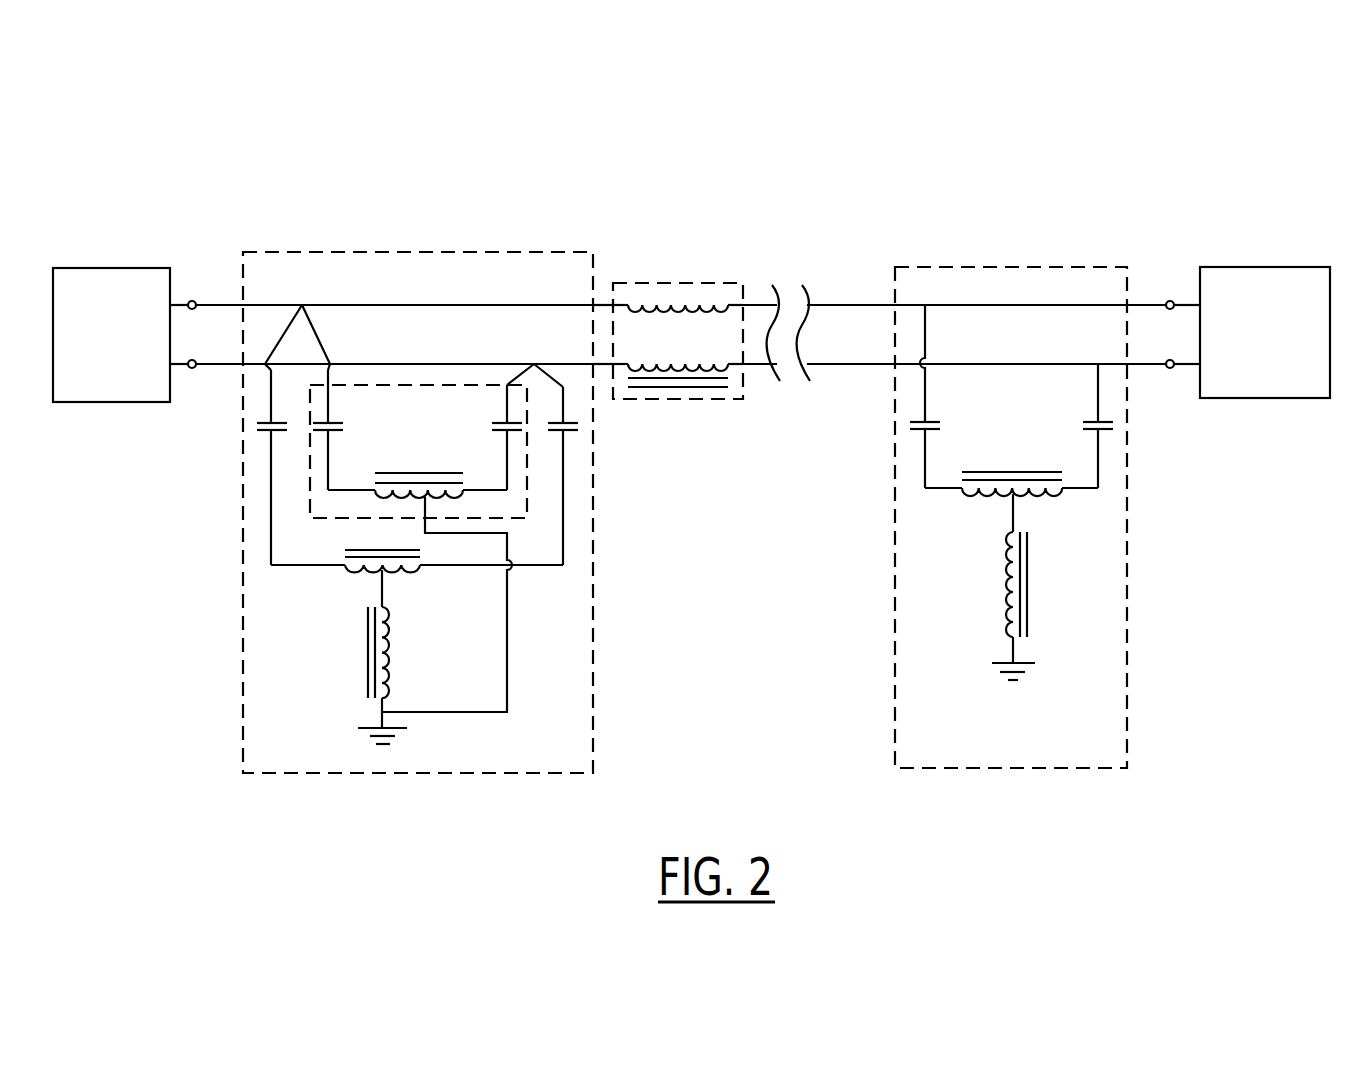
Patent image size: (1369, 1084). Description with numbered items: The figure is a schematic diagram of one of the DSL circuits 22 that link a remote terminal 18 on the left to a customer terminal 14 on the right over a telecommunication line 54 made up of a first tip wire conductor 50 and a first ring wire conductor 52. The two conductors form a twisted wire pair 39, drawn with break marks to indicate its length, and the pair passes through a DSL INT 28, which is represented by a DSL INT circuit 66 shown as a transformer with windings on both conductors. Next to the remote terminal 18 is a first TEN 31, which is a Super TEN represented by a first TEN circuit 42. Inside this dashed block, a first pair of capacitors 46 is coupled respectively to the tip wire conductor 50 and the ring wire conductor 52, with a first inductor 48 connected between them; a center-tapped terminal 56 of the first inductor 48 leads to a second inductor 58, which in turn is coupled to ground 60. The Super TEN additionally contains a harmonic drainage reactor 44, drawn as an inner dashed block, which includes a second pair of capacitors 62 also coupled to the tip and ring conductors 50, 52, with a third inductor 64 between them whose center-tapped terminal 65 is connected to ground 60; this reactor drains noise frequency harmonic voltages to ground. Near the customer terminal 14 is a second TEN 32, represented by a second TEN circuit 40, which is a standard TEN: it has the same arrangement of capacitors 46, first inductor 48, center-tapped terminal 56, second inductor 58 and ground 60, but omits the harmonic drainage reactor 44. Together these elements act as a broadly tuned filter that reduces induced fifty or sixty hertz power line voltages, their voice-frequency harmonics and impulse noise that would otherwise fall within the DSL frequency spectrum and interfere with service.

The customer terminal 14 is at (1272, 267).
The remote terminal 18 is at (103, 268).
The DSL circuit 22 is at (1040, 210).
The DSL INT 28 is at (657, 283).
The first TEN 31 is at (315, 252).
The second TEN 32 is at (940, 267).
The twisted wire pair 39 is at (768, 364).
The second TEN circuit 40 is at (1057, 267).
The first TEN circuit 42 is at (472, 252).
The harmonic drainage reactor 44 is at (308, 485).
The first pair of capacitors 46 is at (260, 443).
The first inductor 48 is at (413, 568).
The first tip wire conductor 50 is at (302, 305).
The first ring wire conductor 52 is at (534, 364).
The telecommunication line 54 is at (596, 364).
The center-tapped terminal 56 is at (378, 568).
The second inductor 58 is at (390, 653).
The ground 60 is at (396, 727).
The second pair of capacitors 62 is at (505, 423).
The third inductor 64 is at (380, 497).
The center-tapped terminal 65 is at (417, 502).
The DSL INT circuit 66 is at (727, 283).